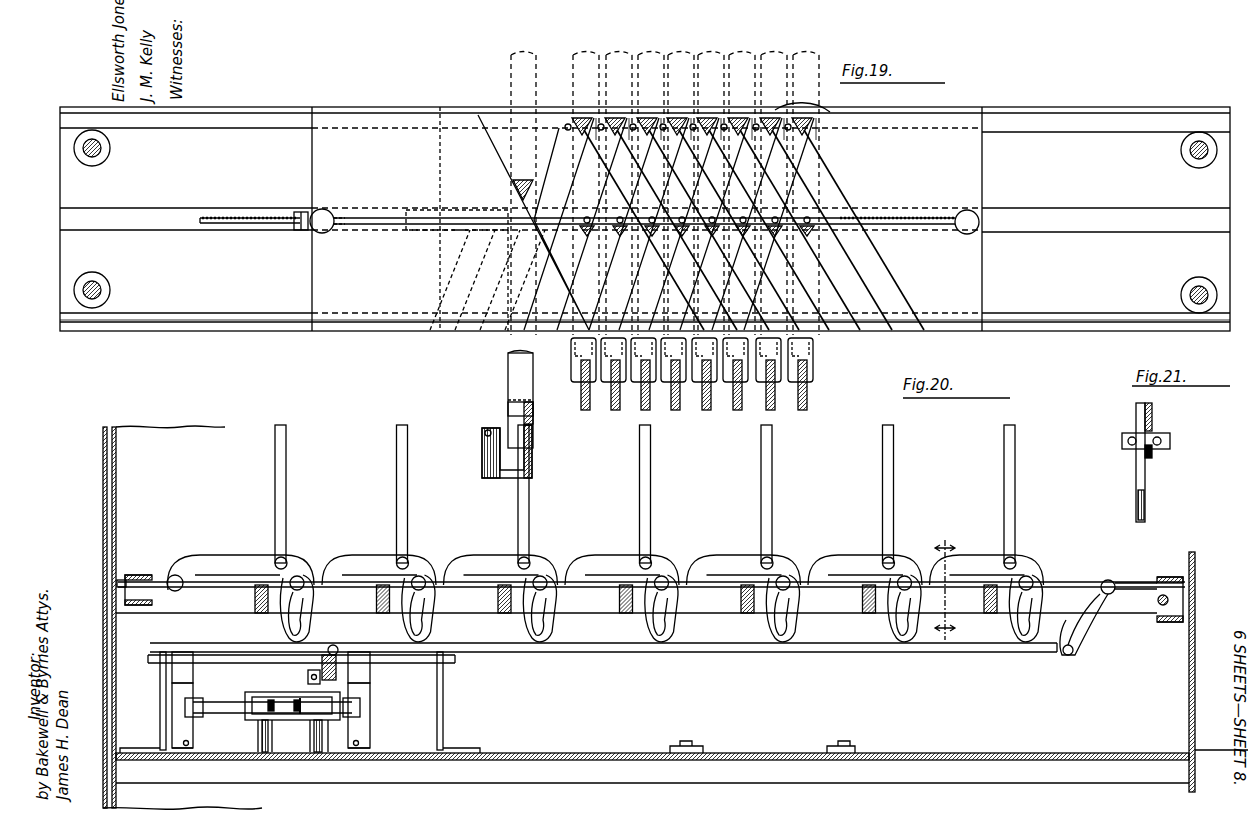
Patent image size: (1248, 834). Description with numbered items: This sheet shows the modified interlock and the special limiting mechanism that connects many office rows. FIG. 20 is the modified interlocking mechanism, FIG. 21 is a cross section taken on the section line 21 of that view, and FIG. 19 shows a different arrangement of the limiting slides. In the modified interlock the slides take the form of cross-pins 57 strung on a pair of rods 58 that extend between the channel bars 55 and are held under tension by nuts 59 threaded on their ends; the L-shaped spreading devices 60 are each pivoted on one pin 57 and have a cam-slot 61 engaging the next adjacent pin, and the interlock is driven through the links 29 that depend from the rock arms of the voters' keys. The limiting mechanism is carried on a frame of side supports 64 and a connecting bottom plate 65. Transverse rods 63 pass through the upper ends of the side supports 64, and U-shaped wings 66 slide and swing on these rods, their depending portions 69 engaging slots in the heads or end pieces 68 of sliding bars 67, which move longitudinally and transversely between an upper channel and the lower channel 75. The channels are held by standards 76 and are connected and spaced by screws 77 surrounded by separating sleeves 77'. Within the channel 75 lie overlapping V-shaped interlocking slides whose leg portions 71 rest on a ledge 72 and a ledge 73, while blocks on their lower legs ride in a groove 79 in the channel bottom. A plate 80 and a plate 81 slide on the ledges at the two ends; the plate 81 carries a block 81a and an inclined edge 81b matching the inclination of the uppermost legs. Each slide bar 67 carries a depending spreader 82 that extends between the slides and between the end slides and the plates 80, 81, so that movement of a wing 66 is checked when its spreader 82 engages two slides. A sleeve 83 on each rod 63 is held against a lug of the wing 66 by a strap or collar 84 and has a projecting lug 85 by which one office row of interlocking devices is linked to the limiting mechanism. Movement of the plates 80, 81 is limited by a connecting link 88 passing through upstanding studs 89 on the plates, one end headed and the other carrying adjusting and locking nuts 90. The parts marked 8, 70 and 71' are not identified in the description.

In FIG. 21, the pivot block 8 is at (1148, 456).
In FIG. 20, the section line 21 is at (650, 586).
In FIG. 20, the links 29 is at (398, 475).
In FIG. 20, the channel bars 55 is at (150, 574).
In FIG. 20, the cross-pins 57 is at (178, 576).
In FIG. 21, the cross-pins 57 is at (1122, 440).
In FIG. 20, the rods 58 is at (1125, 580).
In FIG. 20, the nuts 59 is at (120, 578).
In FIG. 20, the L-shaped spreading devices 60 is at (238, 555).
In FIG. 21, the L-shaped spreading devices 60 is at (1140, 403).
In FIG. 20, the cam-slot 61 is at (312, 575).
In FIG. 20, the transverse rods 63 is at (437, 670).
In FIG. 20, the side supports 64 is at (160, 710).
In FIG. 20, the bottom plate 65 is at (318, 760).
In FIG. 20, the U-shaped wings 66 is at (950, 652).
In FIG. 19, the sliding bars 67 is at (795, 52).
In FIG. 20, the sliding bars 67 is at (508, 356).
In FIG. 20, the heads or end pieces 68 is at (507, 408).
In FIG. 20, the depending portions 69 is at (525, 452).
In FIG. 20, the screws 70 is at (482, 430).
In FIG. 19, the leg portions 71 is at (698, 222).
In FIG. 20, the bar 71' is at (272, 706).
In FIG. 19, the ledge 72 is at (1078, 132).
In FIG. 19, the ledge 73 is at (1092, 325).
In FIG. 20, the lower channel 75 is at (278, 715).
In FIG. 20, the standards or studs 76 is at (266, 760).
In FIG. 19, the screws 77 is at (646, 221).
In FIG. 20, the separating sleeves or collars 77' is at (293, 695).
In FIG. 19, the groove 79 is at (1035, 230).
In FIG. 19, the plate 80 is at (970, 166).
In FIG. 19, the plate 81 is at (449, 219).
In FIG. 19, the block 81a is at (425, 210).
In FIG. 19, the inclined edge 81b is at (560, 274).
In FIG. 19, the depending spreader 82 is at (545, 148).
In FIG. 20, the sleeve 83 is at (320, 682).
In FIG. 20, the strap or collar 84 is at (308, 660).
In FIG. 20, the projecting lug 85 is at (330, 648).
In FIG. 19, the connecting link 88 is at (243, 216).
In FIG. 19, the studs 89 is at (326, 210).
In FIG. 19, the adjusting and locking nuts 90 is at (304, 212).